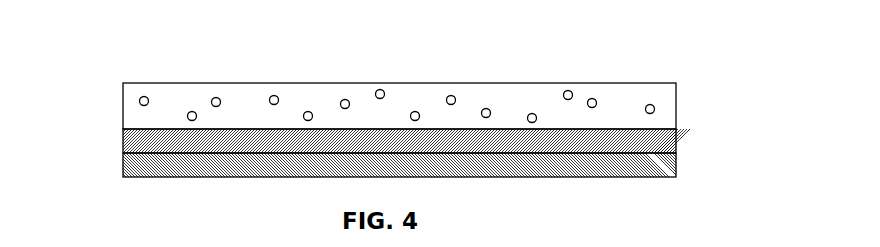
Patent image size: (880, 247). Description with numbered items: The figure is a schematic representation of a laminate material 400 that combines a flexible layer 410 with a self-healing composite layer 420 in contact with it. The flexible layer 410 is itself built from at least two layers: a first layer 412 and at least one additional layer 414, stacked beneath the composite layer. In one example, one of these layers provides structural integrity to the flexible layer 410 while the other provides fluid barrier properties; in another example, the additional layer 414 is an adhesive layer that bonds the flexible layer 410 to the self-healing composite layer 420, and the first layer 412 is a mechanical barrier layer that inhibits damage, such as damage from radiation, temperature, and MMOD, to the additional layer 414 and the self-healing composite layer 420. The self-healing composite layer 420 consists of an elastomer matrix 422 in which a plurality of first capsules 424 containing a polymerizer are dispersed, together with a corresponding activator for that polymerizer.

The laminate material 400 is at (718, 56).
The flexible layer 410 is at (395, 159).
The first layer 412 is at (676, 166).
The additional layer 414 is at (676, 140).
The self-healing composite layer 420 is at (123, 108).
The elastomer matrix 422 is at (397, 80).
The first capsules 424 is at (345, 98).